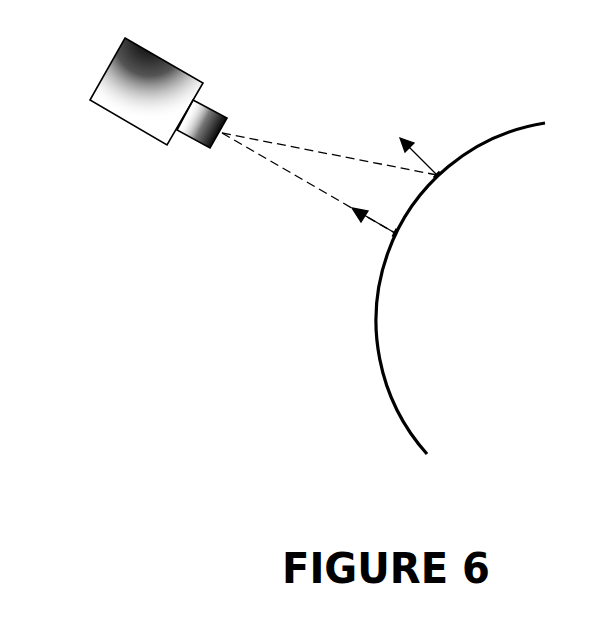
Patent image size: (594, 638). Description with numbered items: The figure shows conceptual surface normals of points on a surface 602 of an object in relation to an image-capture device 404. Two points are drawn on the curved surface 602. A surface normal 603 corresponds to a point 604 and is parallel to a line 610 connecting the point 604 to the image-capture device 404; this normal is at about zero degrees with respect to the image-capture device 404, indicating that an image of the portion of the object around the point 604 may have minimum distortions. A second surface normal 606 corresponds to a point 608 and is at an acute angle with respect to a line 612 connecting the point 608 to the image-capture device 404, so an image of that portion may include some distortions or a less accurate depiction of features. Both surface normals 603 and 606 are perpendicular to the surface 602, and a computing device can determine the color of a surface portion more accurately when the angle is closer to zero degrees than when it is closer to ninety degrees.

The image-capture device 404 is at (107, 70).
The surface 602 is at (500, 133).
The surface normal 603 is at (373, 224).
The point 604 is at (395, 233).
The surface normal 606 is at (418, 158).
The point 608 is at (437, 175).
The line 610 is at (320, 191).
The line 612 is at (293, 148).